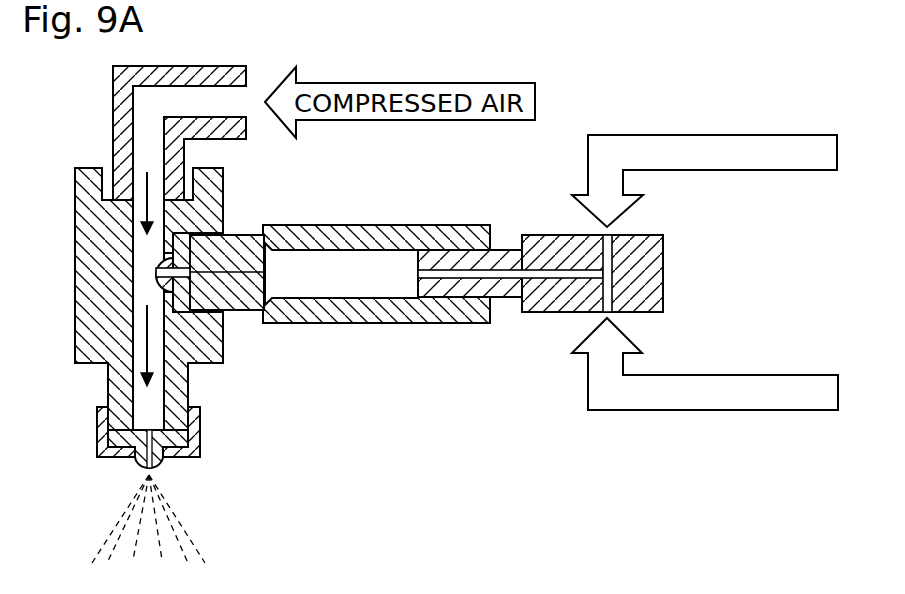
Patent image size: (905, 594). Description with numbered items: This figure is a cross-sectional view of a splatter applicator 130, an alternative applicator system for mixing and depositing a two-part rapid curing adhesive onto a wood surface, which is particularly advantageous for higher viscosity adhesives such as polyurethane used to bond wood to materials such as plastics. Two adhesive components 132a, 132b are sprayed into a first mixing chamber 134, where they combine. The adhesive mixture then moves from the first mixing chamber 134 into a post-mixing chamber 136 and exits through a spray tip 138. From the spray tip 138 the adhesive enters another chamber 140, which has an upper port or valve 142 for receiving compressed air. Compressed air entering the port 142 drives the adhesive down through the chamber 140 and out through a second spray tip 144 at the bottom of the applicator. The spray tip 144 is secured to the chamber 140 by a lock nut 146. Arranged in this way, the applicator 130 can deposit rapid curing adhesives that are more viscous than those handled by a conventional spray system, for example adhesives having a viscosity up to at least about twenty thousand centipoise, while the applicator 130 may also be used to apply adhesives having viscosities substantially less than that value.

The splatter applicator 130 is at (86, 104).
The upper port or valve 142 is at (181, 66).
The chamber 140 is at (137, 318).
The spray tip 138 is at (155, 263).
The post-mixing chamber 136 is at (440, 225).
The first mixing chamber 134 is at (540, 313).
The lock nut 146 is at (200, 420).
The spray tip 144 is at (162, 468).
The adhesive component 132a is at (698, 135).
The adhesive component 132b is at (700, 375).